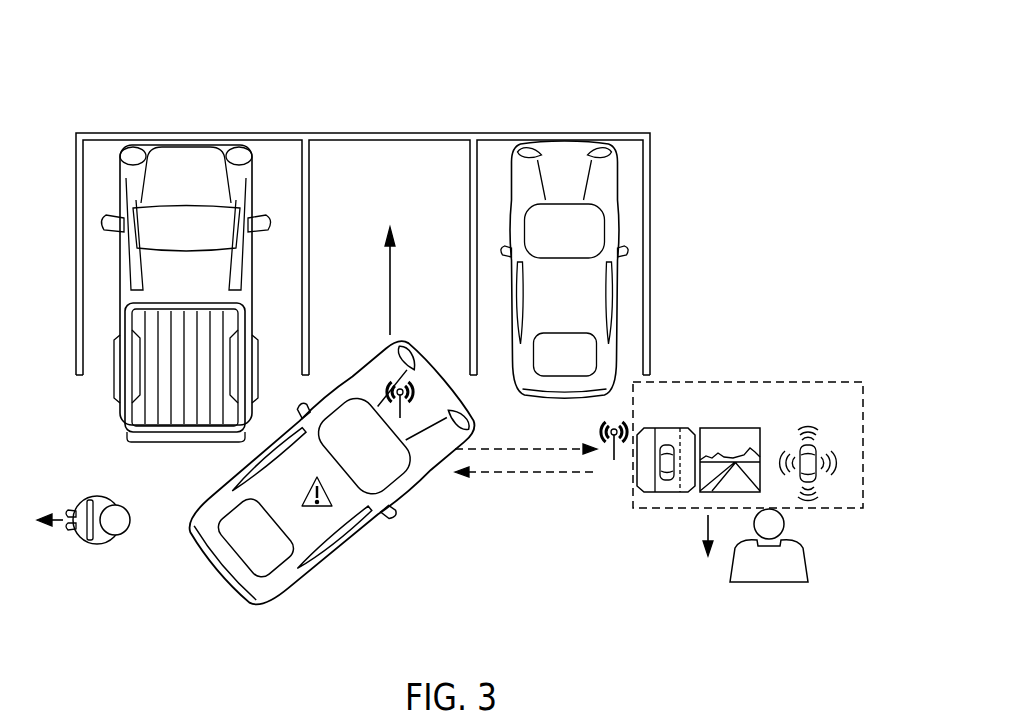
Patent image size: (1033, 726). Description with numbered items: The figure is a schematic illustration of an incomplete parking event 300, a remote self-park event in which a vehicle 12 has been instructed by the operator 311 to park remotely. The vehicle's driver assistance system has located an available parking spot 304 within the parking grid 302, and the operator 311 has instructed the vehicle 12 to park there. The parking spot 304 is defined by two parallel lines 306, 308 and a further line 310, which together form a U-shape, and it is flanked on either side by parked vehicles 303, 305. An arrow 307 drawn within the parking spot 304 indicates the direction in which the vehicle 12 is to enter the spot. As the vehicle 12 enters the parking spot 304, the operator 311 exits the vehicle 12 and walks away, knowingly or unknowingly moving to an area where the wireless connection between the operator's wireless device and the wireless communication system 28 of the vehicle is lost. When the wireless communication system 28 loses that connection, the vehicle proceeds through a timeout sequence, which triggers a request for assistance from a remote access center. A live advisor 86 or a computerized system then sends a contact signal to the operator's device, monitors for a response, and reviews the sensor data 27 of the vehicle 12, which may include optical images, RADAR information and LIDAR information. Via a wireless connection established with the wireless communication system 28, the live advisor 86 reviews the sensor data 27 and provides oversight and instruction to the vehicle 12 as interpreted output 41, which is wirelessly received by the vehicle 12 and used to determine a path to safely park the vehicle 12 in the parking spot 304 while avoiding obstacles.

The incomplete parking event 300 is at (654, 77).
The parking grid 302 is at (315, 133).
The parked vehicle 303 is at (178, 152).
The parking spot 304 is at (403, 197).
The parked vehicle 305 is at (562, 166).
The parallel line 306 is at (309, 246).
The parking path arrow 307 is at (392, 320).
The parallel line 308 is at (472, 236).
The line 310 is at (418, 141).
The operator 311 is at (97, 496).
The vehicle 12 is at (360, 522).
The wireless communication system 28 is at (396, 379).
The sensor data 27 is at (466, 440).
The interpreted output 41 is at (594, 473).
The live advisor 86 is at (796, 559).